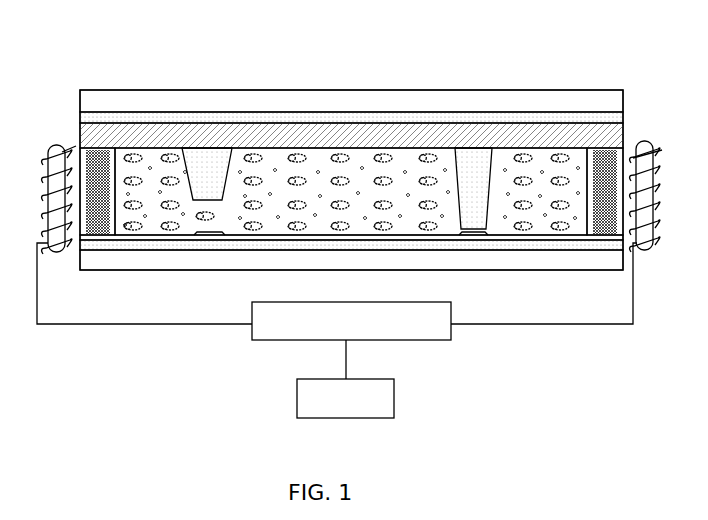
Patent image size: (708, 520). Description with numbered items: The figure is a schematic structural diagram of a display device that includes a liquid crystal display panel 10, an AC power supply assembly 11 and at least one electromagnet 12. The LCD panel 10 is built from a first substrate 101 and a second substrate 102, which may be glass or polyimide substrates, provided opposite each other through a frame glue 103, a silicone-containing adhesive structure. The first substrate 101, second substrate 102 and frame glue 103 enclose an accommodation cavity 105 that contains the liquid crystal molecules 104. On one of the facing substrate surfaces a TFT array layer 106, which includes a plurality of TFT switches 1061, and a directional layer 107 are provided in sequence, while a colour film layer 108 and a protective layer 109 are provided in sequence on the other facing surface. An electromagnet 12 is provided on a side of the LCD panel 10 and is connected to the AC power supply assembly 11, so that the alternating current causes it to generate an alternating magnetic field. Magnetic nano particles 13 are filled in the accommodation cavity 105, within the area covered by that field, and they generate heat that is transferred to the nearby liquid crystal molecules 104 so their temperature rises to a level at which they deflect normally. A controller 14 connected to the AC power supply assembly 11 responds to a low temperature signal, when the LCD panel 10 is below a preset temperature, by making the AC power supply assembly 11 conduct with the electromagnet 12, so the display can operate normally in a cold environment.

The liquid crystal display panel 10 is at (184, 88).
The electromagnet 12 is at (56, 133).
The AC power supply assembly 11 is at (253, 339).
The controller 14 is at (297, 395).
The magnetic nano particles 13 is at (325, 218).
The first substrate 101 is at (153, 263).
The second substrate 102 is at (264, 100).
The frame glue 103 is at (96, 225).
The liquid crystal molecule 104 is at (336, 155).
The accommodation cavity 105 is at (542, 155).
The TFT array layer 106 is at (230, 245).
The TFT switch 1061 is at (206, 240).
The directional layer 107 is at (383, 242).
The colour film layer 108 is at (441, 118).
The protective layer 109 is at (387, 135).